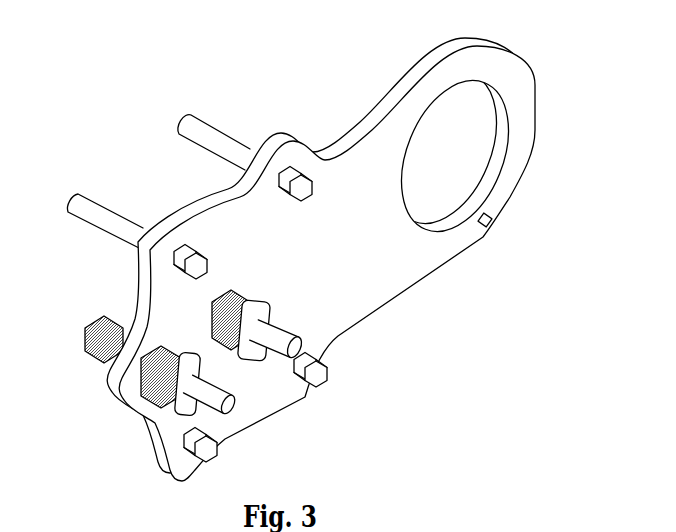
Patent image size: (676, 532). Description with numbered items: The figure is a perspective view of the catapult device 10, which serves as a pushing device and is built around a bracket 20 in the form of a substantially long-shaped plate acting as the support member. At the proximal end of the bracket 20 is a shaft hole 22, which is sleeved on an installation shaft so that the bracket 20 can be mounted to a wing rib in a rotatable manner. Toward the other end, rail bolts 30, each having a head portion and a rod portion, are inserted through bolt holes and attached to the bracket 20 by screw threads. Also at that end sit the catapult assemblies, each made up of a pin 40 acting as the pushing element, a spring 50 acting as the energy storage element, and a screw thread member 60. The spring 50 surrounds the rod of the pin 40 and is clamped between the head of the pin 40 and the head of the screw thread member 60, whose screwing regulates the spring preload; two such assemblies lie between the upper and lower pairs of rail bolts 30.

The catapult device 10 is at (113, 84).
The bracket 20 is at (351, 126).
The shaft hole 22 is at (462, 167).
The rail bolt 30 is at (200, 142).
The pin 40 is at (280, 353).
The spring 50 is at (94, 349).
The screw thread member 60 is at (290, 309).